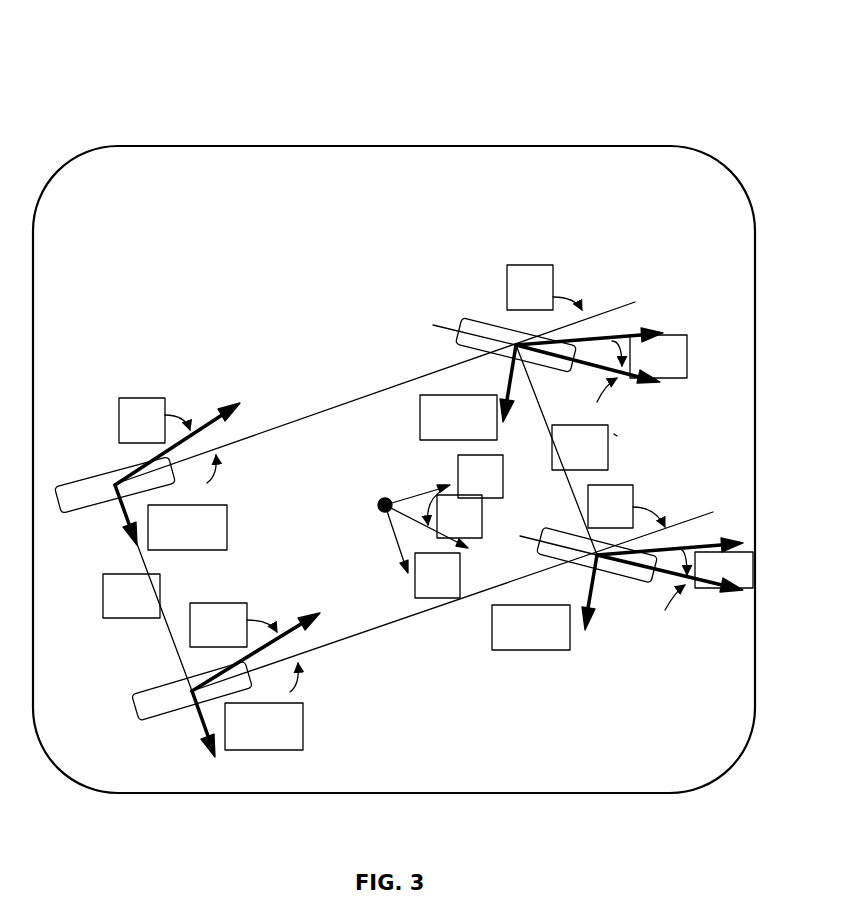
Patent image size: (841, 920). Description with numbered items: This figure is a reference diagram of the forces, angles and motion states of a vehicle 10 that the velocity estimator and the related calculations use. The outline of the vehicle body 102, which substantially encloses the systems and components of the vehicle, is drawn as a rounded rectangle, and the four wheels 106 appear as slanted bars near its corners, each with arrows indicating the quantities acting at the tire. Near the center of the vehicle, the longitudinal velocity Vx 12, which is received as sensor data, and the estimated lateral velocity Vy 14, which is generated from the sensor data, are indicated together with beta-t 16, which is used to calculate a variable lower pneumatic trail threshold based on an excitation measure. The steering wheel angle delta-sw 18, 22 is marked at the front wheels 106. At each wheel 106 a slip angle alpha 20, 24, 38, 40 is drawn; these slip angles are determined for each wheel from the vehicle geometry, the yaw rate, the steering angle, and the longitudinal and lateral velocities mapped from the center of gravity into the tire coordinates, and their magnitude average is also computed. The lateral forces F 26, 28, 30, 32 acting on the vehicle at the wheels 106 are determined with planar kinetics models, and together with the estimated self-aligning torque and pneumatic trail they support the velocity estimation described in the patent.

The system 10 is at (147, 32).
The body 102 is at (340, 403).
The wheels 106 is at (85, 472).
The velocity in the x direction 12 is at (497, 455).
The estimated lateral velocity 14 is at (460, 578).
The beta-t 16 is at (482, 520).
The steering wheel angle 18 is at (530, 265).
The slip angle 20 is at (687, 335).
The steering wheel angle 22 is at (633, 497).
The slip angle 24 is at (743, 592).
The lateral force 26 is at (420, 417).
The lateral force 28 is at (510, 652).
The lateral force 30 is at (283, 750).
The lateral force 32 is at (218, 505).
The slip angle 38 is at (232, 603).
The slip angle 40 is at (155, 398).